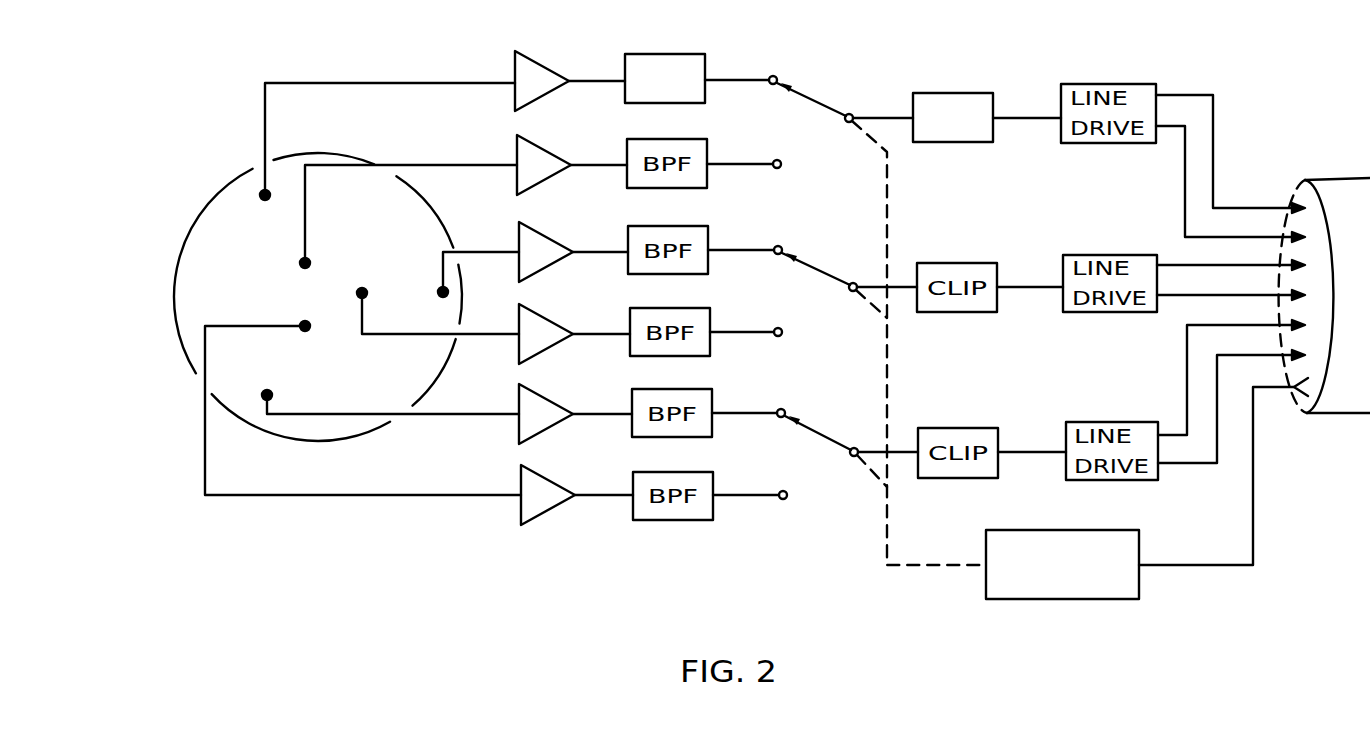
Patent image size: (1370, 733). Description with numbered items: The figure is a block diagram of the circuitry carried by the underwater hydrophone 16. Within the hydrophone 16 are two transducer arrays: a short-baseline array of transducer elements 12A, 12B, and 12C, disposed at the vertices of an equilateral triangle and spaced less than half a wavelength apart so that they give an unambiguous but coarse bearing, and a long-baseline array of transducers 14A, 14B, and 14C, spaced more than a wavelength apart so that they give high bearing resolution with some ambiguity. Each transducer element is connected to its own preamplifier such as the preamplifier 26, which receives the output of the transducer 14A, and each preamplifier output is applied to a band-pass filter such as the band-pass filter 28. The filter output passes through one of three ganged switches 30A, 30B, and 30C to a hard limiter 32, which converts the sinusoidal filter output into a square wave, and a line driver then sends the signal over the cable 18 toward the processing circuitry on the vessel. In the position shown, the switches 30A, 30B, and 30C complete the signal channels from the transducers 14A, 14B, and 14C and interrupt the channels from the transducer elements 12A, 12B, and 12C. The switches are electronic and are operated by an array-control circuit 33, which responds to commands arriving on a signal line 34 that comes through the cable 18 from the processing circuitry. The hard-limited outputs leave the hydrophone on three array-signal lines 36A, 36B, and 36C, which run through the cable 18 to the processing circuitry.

The transducer element 12A is at (307, 260).
The transducer element 12B is at (366, 295).
The transducer element 12C is at (310, 328).
The transducer 14A is at (266, 201).
The transducer 14B is at (440, 292).
The transducer 14C is at (267, 391).
The hydrophone 16 is at (361, 158).
The cable 18 is at (1335, 178).
The preamplifier 26 is at (540, 64).
The band-pass filter 28 is at (672, 53).
The switch 30A is at (810, 99).
The switch 30B is at (815, 270).
The switch 30C is at (832, 458).
The hard limiter 32 is at (971, 93).
The array-control circuit 33 is at (1058, 530).
The signal line 34 is at (1188, 565).
The array-signal line 36A is at (1235, 237).
The array-signal line 36B is at (1258, 295).
The array-signal line 36C is at (1243, 355).